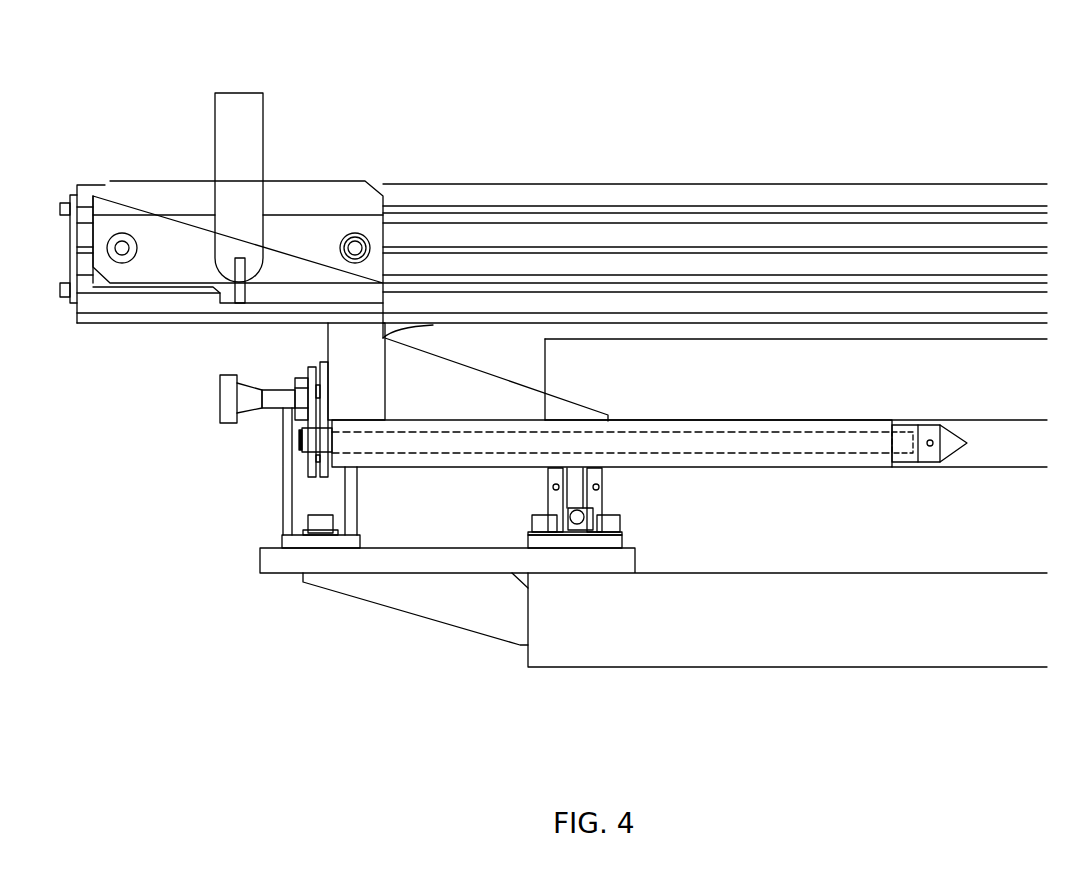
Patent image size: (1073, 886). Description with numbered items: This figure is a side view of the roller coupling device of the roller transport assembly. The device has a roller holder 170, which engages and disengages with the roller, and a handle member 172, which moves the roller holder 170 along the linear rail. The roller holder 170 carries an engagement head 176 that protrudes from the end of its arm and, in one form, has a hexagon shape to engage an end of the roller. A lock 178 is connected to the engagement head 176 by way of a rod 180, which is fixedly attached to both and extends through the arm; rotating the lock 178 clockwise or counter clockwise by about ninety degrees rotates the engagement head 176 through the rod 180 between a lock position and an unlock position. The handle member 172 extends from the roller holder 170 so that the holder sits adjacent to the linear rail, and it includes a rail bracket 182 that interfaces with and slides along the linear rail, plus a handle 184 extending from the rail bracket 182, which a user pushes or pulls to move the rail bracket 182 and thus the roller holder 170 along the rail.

The roller holder 170 is at (403, 468).
The handle member 172 is at (162, 138).
The engagement head 176 is at (952, 433).
The lock 178 is at (220, 400).
The rod 180 is at (750, 453).
The rail bracket 182 is at (332, 187).
The handle 184 is at (236, 92).